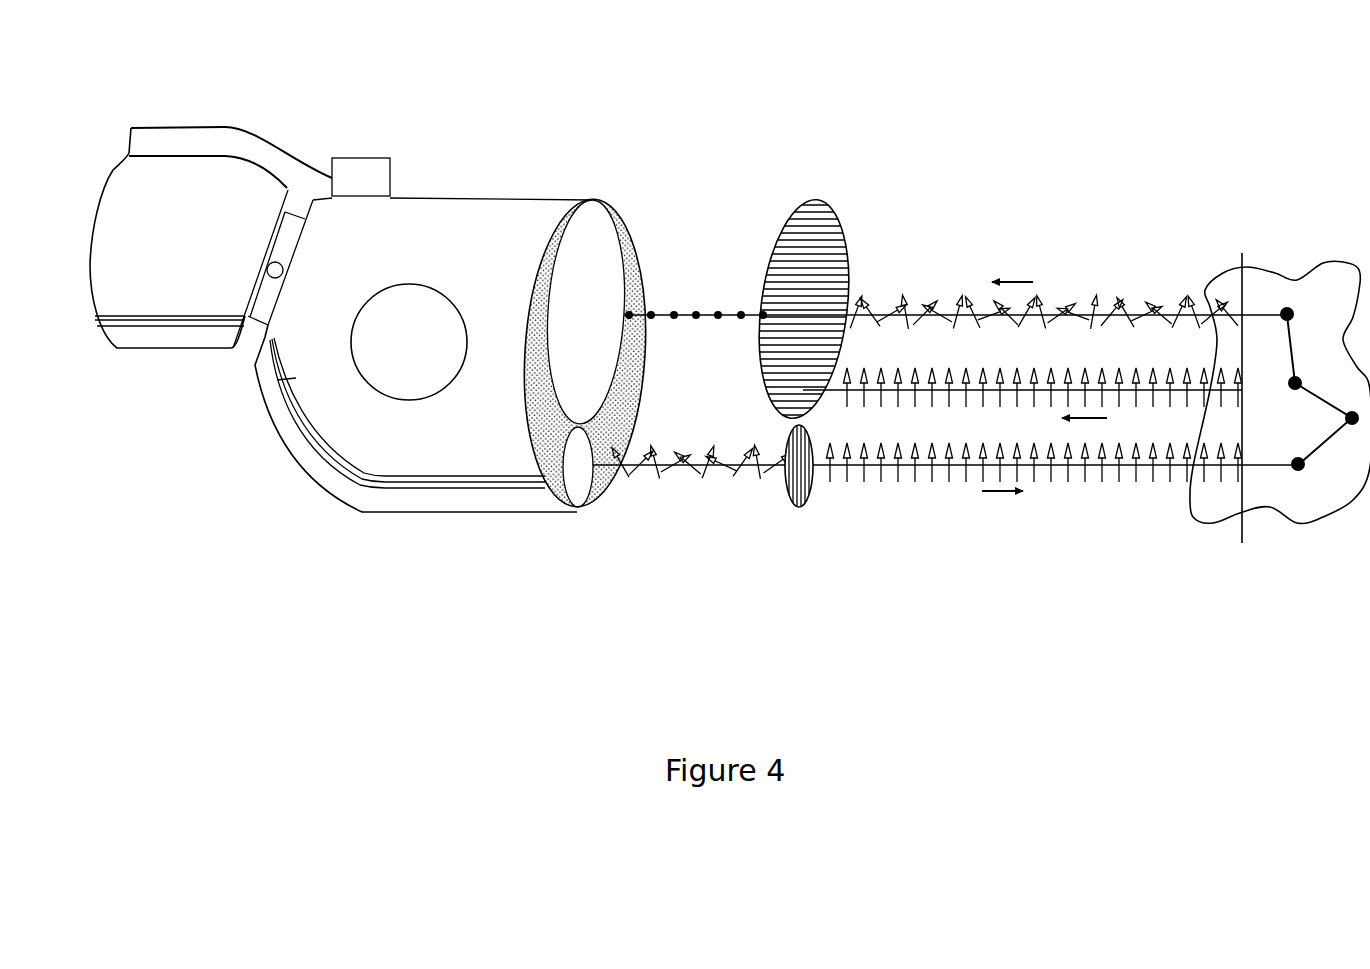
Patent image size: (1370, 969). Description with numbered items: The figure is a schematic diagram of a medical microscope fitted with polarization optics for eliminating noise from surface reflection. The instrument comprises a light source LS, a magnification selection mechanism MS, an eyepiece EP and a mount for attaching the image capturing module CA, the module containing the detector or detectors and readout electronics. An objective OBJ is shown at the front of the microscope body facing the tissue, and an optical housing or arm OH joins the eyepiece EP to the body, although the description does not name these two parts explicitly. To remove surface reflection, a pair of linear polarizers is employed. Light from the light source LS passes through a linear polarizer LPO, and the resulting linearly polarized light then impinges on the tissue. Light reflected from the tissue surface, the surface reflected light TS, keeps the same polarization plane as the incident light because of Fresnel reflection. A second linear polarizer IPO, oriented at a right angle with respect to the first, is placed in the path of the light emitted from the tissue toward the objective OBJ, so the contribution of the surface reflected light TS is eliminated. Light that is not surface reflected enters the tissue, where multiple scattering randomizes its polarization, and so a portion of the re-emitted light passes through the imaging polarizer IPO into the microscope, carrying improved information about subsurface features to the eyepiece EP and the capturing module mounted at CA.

The eyepiece EP is at (131, 128).
The mount for attaching the image capturing module CA is at (392, 168).
The objective lens OBJ is at (595, 210).
The linear polarizer IPO is at (842, 245).
The magnification selection mechanism MS is at (426, 374).
The optical head holder arm OH is at (278, 380).
The light source LS is at (600, 490).
The linear polarizer LPO is at (803, 490).
The surface reflected light TS is at (1243, 533).